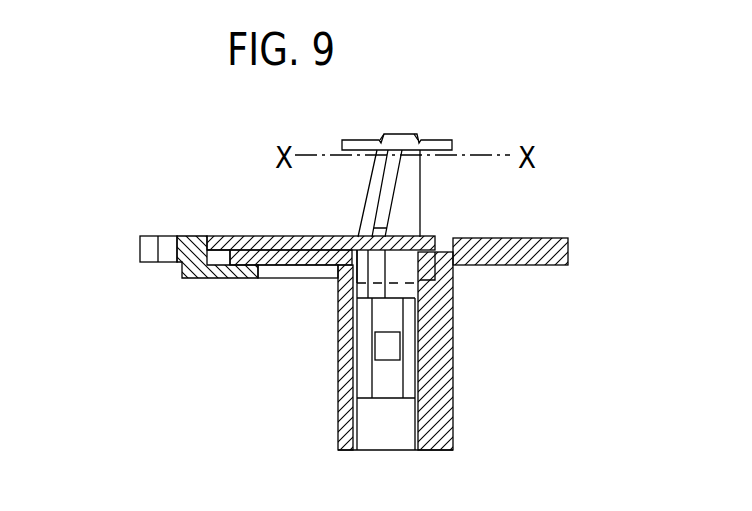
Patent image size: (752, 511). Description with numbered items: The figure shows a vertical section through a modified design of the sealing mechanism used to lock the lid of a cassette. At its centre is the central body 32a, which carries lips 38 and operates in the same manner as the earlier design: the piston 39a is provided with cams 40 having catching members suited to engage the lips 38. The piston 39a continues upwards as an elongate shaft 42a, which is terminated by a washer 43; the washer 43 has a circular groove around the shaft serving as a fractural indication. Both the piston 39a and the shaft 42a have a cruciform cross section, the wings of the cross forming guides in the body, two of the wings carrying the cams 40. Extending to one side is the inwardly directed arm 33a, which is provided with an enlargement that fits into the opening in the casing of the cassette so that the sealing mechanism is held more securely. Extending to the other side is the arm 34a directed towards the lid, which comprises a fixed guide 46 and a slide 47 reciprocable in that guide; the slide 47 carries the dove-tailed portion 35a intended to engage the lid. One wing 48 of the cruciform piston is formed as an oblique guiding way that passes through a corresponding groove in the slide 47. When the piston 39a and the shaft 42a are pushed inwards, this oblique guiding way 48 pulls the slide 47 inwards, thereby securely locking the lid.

The central body 32a is at (444, 399).
The inwardly directed arm 33a is at (570, 252).
The arm directed towards the lid 34a is at (263, 233).
The dove-tailed portion 35a is at (148, 249).
The lips 38 is at (387, 346).
The piston 39a is at (402, 266).
The cams 40 is at (326, 276).
The shaft 42a is at (407, 203).
The washer 43 is at (440, 144).
The fixed guide 46 is at (283, 262).
The slide 47 is at (196, 245).
The oblique guiding way wing 48 is at (375, 203).